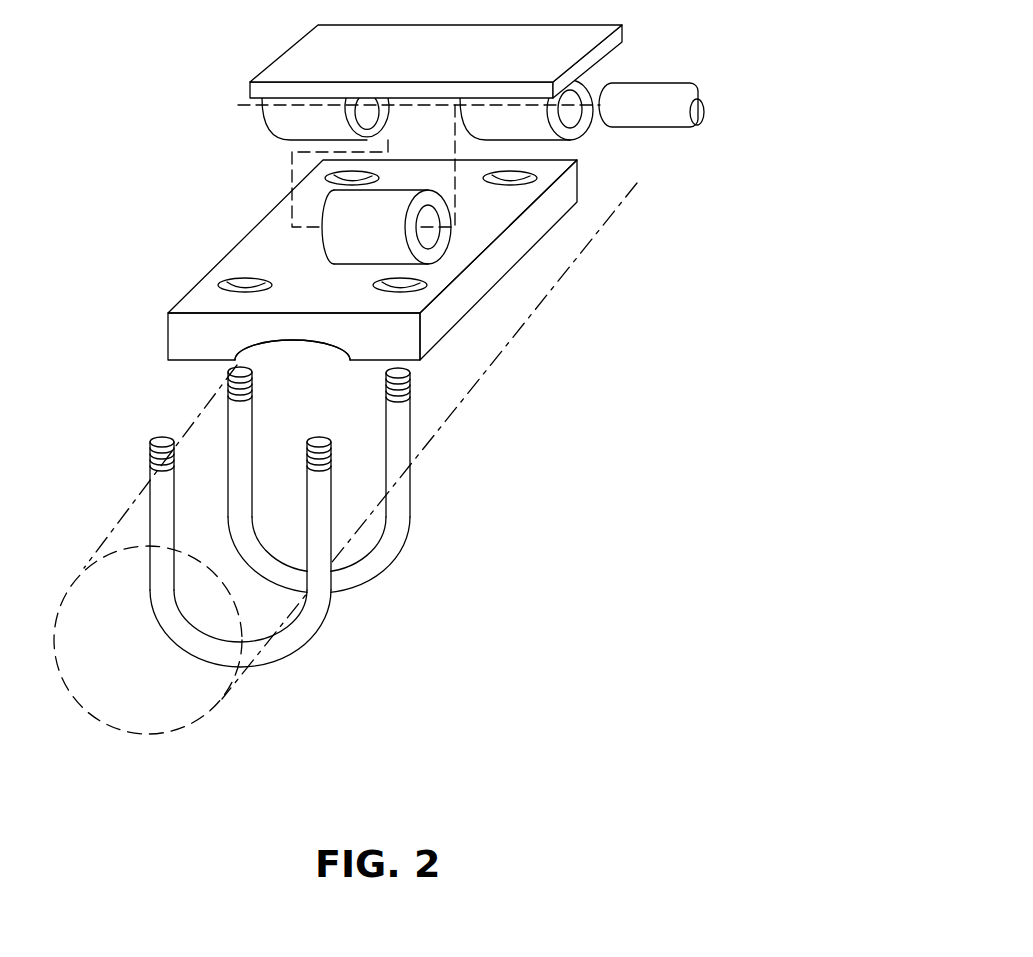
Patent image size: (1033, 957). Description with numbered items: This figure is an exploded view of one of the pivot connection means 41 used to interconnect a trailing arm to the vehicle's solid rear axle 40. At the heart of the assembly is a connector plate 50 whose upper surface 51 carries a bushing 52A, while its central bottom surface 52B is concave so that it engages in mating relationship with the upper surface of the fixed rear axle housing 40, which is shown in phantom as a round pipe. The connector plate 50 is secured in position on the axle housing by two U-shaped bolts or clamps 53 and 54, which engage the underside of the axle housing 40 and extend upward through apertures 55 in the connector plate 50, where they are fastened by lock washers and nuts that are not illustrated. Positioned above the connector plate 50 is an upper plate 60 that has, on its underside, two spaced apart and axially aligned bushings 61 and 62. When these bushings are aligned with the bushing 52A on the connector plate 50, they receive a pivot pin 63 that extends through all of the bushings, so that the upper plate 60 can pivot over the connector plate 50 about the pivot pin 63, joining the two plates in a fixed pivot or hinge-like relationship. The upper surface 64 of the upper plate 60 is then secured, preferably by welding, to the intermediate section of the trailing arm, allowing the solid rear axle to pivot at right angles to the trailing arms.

The solid rear axle 40 is at (470, 363).
The pivot connection means 41 is at (567, 419).
The connector plate 50 is at (400, 286).
The upper surface 51 is at (333, 300).
The bushing 52A is at (322, 240).
The central bottom surface 52B is at (293, 340).
The U-shaped bolt 53 is at (410, 520).
The U-shaped bolt 54 is at (322, 628).
The apertures 55 is at (340, 175).
The upper plate 60 is at (413, 61).
The bushing 61 is at (270, 133).
The bushing 62 is at (530, 127).
The pivot pin 63 is at (635, 98).
The upper surface 64 is at (440, 67).